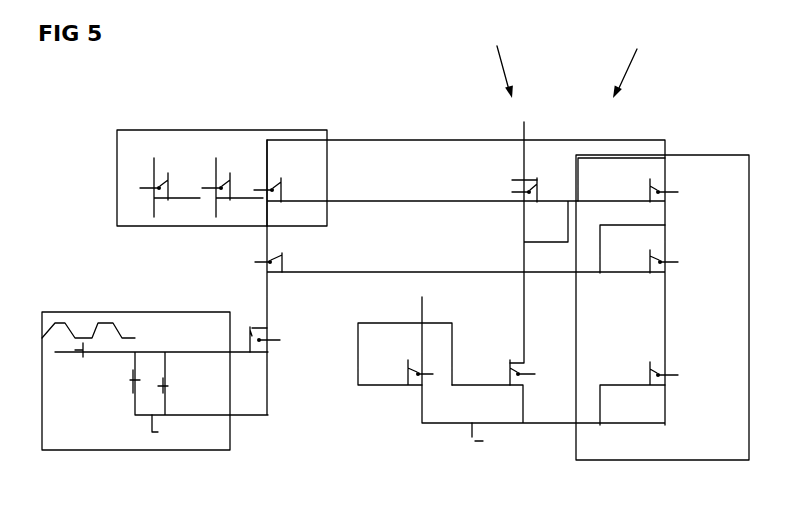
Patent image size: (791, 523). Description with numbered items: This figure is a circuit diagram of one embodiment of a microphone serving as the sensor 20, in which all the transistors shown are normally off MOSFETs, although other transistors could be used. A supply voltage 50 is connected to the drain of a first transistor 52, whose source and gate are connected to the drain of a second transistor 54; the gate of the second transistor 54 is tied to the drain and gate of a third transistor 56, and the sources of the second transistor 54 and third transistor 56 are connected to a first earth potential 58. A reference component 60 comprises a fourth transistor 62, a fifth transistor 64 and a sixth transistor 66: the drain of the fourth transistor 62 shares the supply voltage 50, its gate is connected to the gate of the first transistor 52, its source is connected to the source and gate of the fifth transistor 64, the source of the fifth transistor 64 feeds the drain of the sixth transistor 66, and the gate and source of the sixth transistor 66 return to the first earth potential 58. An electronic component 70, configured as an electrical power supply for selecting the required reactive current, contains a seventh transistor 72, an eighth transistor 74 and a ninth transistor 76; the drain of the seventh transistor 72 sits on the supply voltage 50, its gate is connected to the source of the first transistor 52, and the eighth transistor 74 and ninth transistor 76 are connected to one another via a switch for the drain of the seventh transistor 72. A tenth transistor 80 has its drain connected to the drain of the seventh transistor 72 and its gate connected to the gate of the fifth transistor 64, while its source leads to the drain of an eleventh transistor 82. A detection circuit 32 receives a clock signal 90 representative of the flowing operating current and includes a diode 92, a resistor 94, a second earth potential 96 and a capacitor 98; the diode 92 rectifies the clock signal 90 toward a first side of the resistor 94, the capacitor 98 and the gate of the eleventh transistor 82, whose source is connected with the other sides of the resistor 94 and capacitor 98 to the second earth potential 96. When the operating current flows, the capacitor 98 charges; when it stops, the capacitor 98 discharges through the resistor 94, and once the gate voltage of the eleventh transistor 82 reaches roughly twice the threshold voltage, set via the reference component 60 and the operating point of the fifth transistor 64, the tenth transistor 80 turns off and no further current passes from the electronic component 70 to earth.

The sensor 20 is at (635, 62).
The detection circuit 32 is at (202, 452).
The supply voltage 50 is at (499, 60).
The first transistor 52 is at (541, 180).
The second transistor 54 is at (509, 368).
The third transistor 56 is at (407, 378).
The first earth potential 58 is at (473, 437).
The reference component 60 is at (711, 155).
The fourth transistor 62 is at (648, 190).
The fifth transistor 64 is at (648, 262).
The sixth transistor 66 is at (648, 373).
The electronic component 70 is at (117, 183).
The seventh transistor 72 is at (284, 192).
The eighth transistor 74 is at (232, 186).
The ninth transistor 76 is at (170, 186).
The tenth transistor 80 is at (287, 258).
The eleventh transistor 82 is at (250, 336).
The clock signal 90 is at (63, 322).
The diode 92 is at (80, 358).
The resistor 94 is at (133, 396).
The second earth potential 96 is at (150, 435).
The capacitor 98 is at (170, 386).